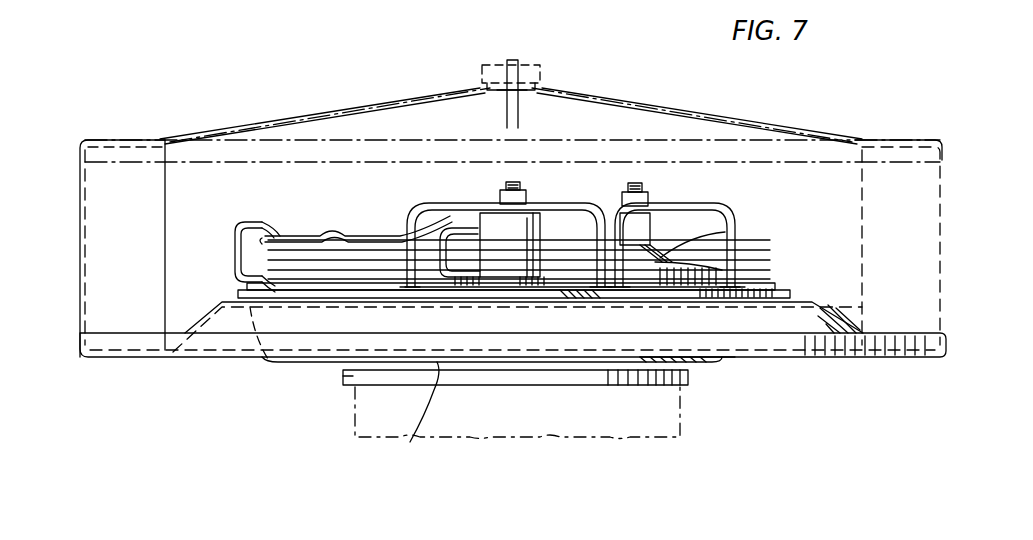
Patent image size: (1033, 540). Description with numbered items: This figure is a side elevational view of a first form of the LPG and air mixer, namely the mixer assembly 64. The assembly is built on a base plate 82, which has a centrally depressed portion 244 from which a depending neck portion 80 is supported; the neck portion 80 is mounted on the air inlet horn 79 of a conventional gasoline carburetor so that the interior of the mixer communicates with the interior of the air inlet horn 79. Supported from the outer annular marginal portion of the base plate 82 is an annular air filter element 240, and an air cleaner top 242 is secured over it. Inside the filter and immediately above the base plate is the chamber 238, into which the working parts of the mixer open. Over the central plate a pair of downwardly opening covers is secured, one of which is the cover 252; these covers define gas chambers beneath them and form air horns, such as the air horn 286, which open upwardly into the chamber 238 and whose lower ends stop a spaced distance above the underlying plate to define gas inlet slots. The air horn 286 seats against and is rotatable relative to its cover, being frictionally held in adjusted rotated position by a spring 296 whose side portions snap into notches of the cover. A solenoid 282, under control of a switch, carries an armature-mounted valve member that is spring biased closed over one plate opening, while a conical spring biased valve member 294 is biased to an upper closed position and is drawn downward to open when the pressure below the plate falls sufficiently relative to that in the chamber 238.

The annular air filter element 240 is at (82, 297).
The air cleaner top 242 is at (303, 122).
The chamber 238 is at (237, 212).
The spring 296 is at (280, 233).
The air horn 286 is at (363, 223).
The solenoid 282 is at (533, 247).
The spring biased valve member 294 is at (663, 243).
The cover 252 is at (698, 263).
The mixer assembly 64 is at (273, 364).
The depending neck portion 80 is at (345, 371).
The centrally depressed portion 244 is at (408, 418).
The base plate 82 is at (717, 364).
The air inlet horn 79 is at (684, 428).